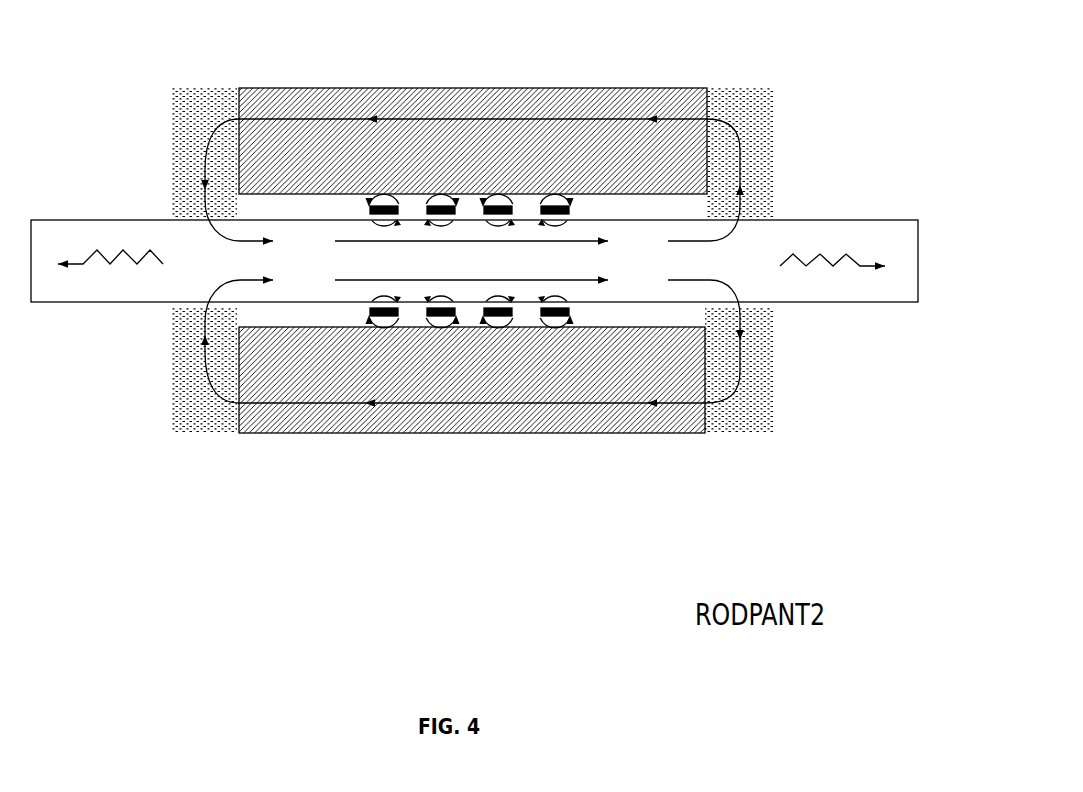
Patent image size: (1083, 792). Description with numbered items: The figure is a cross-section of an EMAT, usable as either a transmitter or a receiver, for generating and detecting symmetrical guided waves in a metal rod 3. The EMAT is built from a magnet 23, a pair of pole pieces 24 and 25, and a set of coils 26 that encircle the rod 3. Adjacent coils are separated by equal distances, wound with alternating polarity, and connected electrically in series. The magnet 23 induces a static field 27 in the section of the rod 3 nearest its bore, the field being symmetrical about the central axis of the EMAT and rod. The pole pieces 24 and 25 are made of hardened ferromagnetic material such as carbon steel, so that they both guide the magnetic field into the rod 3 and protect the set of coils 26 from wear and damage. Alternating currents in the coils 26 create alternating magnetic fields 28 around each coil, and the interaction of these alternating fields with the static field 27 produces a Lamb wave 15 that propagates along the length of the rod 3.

The rod 3 is at (818, 218).
The Lamb wave 15 is at (124, 250).
The magnet 23 is at (327, 378).
The pole piece 24 is at (198, 117).
The pole piece 25 is at (738, 405).
The set of coils 26 is at (805, 263).
The static field 27 is at (415, 118).
The alternating magnetic field 28 is at (558, 190).